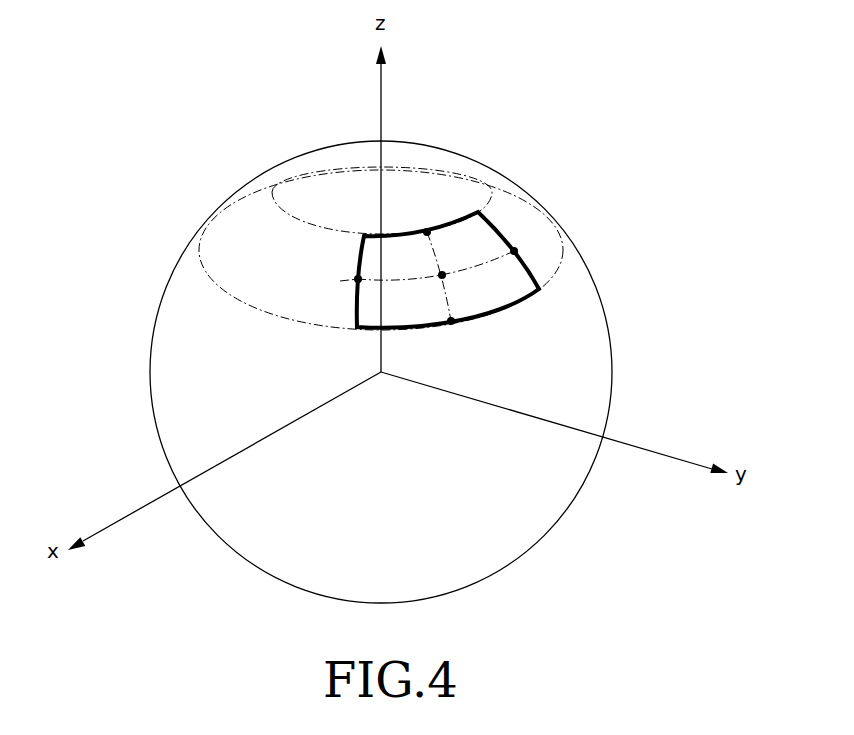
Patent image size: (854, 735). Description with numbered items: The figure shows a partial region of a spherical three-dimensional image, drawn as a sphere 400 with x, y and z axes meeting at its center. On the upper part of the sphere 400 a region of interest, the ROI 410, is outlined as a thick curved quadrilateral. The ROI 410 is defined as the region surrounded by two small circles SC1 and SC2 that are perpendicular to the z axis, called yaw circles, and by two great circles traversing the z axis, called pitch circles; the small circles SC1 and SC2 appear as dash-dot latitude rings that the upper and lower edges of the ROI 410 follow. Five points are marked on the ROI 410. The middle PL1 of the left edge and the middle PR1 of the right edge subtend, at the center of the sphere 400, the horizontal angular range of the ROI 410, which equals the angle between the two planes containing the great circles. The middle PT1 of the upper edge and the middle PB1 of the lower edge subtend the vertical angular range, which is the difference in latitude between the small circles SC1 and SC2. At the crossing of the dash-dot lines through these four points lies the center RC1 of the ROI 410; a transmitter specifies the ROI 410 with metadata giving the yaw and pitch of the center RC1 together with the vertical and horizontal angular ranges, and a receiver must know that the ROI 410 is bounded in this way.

The sphere 400 is at (268, 169).
The ROI 410 is at (536, 294).
The small circle SC1 is at (290, 213).
The small circle SC2 is at (222, 287).
The middle of the upper edge PT1 is at (427, 232).
The middle of the lower edge PB1 is at (451, 321).
The middle of the left edge PL1 is at (357, 279).
The middle of the right edge PR1 is at (514, 251).
The center of the ROI RC1 is at (442, 275).